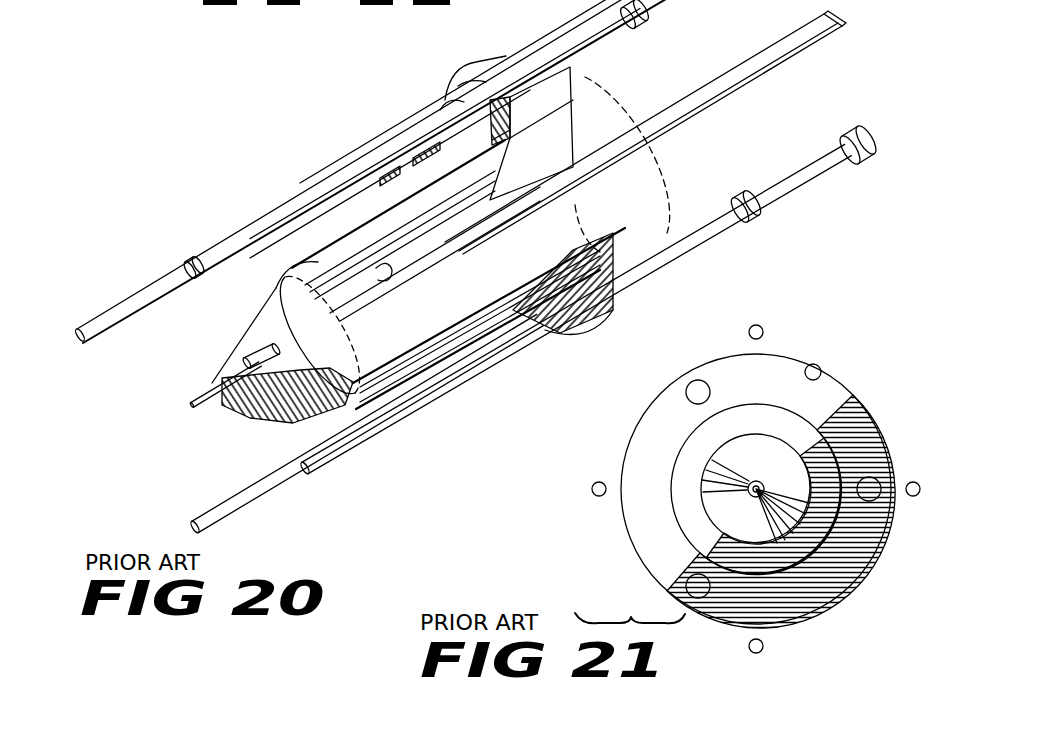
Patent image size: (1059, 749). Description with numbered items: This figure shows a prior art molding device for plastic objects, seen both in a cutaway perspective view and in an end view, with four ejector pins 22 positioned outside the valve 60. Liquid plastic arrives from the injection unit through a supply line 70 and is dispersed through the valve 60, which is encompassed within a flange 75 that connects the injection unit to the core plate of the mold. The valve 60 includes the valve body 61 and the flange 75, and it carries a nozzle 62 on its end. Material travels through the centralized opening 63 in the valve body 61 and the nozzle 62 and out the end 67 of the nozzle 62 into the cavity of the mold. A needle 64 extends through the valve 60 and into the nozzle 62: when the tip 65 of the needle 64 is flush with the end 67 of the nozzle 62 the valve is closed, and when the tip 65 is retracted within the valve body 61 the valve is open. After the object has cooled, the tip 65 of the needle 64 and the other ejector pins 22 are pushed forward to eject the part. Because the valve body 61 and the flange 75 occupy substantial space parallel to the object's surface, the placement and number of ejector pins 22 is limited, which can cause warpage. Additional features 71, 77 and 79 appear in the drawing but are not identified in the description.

In FIG. 20, the valve 60 is at (287, 152).
In FIG. 21, the valve 60 is at (648, 398).
In FIG. 20, the ejector pins 22 is at (190, 266).
In FIG. 21, the ejector pins 22 is at (594, 486).
In FIG. 20, the valve body 61 is at (378, 170).
In FIG. 21, the valve body 61 is at (668, 502).
In FIG. 20, the nozzle 62 is at (224, 343).
In FIG. 21, the nozzle 62 is at (757, 481).
In FIG. 20, the centralized opening 63 is at (386, 268).
In FIG. 20, the needle 64 is at (752, 65).
In FIG. 20, the tip 65 is at (193, 409).
In FIG. 21, the tip 65 is at (752, 494).
In FIG. 20, the end 67 is at (255, 403).
In FIG. 20, the supply line 70 is at (584, 80).
In FIG. 20, the clamp 71 is at (410, 157).
In FIG. 20, the flange 75 is at (486, 76).
In FIG. 21, the flange 75 is at (630, 446).
In FIG. 20, the flange bolt hole 77 is at (660, 216).
In FIG. 21, the flange bolt hole 77 is at (697, 385).
In FIG. 20, the notch 79 is at (442, 104).
In FIG. 21, the notch 79 is at (813, 364).